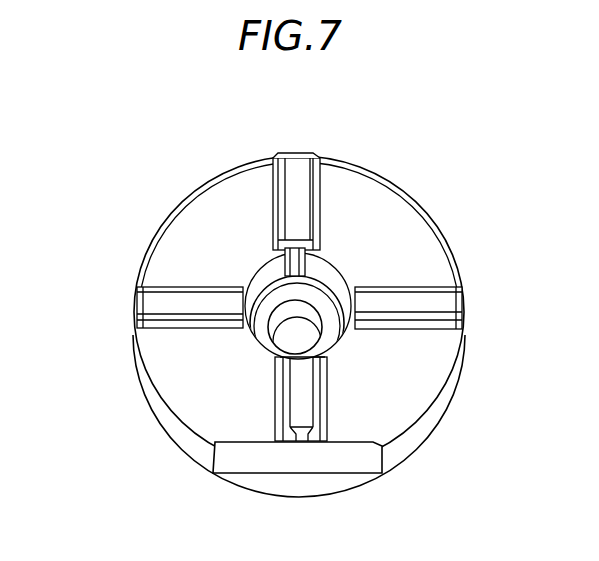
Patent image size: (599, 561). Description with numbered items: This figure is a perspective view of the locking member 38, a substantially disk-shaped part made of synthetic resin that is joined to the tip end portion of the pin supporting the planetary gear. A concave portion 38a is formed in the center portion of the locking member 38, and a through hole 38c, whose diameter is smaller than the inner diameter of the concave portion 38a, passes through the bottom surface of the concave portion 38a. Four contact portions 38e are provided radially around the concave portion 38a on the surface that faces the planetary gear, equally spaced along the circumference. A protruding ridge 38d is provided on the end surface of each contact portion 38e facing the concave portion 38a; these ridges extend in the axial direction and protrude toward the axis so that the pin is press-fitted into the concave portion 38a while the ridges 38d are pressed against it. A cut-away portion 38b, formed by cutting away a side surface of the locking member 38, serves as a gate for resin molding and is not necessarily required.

The locking member 38 is at (422, 202).
The concave portion 38a is at (262, 342).
The cut-away portion 38b is at (340, 465).
The through hole 38c is at (313, 340).
The protruding ridge 38d is at (287, 263).
The contact portion 38e is at (297, 175).